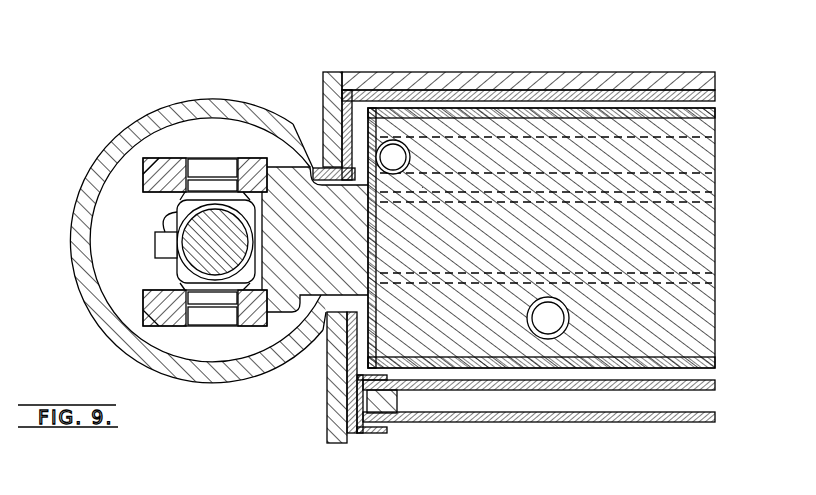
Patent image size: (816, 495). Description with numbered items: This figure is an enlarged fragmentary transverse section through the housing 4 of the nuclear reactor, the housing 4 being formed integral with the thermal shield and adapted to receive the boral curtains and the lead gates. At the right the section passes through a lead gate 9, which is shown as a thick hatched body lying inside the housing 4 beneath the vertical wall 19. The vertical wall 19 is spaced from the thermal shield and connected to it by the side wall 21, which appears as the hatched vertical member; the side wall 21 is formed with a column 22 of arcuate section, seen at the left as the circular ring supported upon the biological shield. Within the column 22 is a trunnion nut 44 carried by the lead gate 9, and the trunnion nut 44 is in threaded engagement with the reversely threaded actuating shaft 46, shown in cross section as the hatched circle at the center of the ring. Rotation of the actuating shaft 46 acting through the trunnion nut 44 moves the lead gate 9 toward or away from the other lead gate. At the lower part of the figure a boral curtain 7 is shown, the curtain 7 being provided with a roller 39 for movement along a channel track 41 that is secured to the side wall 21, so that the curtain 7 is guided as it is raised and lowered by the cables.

The housing 4 is at (442, 72).
The boral curtain 7 is at (665, 423).
The lead gate 9 is at (697, 245).
The vertical wall 19 is at (513, 71).
The side wall 21 is at (323, 116).
The column 22 is at (120, 142).
The roller 39 is at (400, 402).
The channel track 41 is at (376, 433).
The trunnion nut 44 is at (163, 231).
The actuating shaft 46 is at (208, 243).